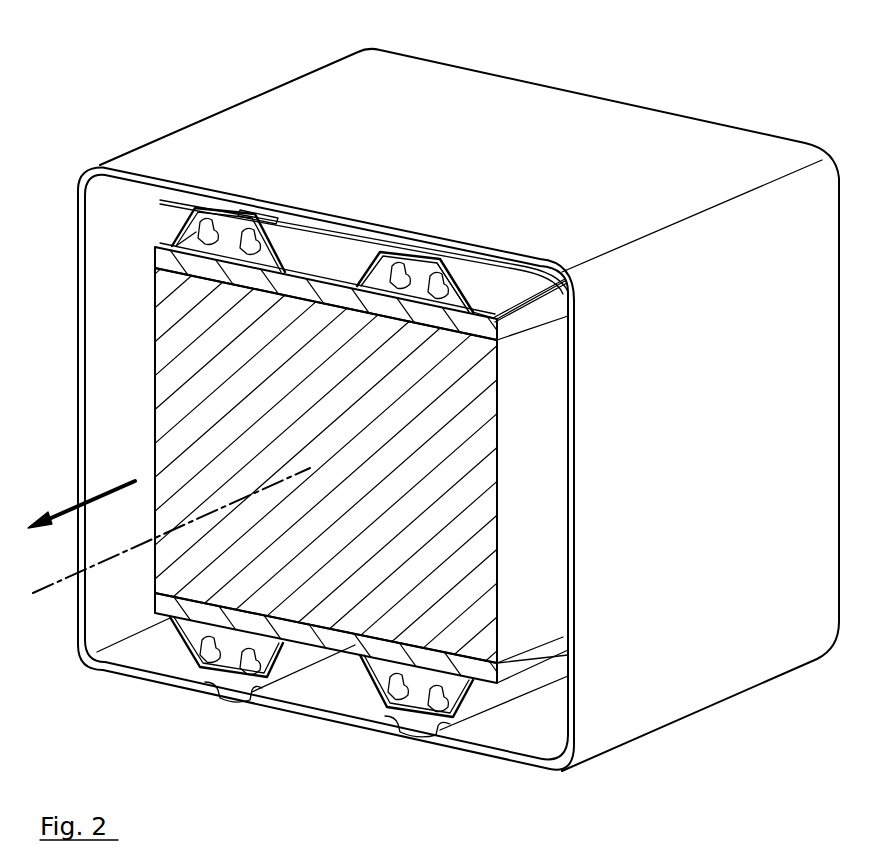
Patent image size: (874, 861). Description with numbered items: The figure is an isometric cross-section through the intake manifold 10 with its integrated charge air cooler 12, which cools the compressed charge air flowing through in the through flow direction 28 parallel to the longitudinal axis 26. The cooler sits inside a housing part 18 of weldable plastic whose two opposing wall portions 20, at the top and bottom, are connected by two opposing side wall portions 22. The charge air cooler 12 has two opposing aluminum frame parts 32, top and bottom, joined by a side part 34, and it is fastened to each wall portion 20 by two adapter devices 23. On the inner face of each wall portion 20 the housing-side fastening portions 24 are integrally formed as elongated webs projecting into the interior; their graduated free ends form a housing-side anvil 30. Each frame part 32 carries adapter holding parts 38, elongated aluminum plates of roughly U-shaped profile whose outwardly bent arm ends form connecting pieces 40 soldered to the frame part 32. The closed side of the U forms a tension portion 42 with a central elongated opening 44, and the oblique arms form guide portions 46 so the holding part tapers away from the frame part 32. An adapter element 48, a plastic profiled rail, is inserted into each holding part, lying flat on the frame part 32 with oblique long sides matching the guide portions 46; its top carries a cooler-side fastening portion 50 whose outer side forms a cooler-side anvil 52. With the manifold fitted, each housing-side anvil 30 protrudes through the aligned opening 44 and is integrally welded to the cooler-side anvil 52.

The intake manifold 10 is at (82, 93).
The charge air cooler 12 is at (146, 395).
The housing part 18 is at (190, 128).
The wall portions 20 is at (312, 103).
The side wall portions 22 is at (78, 343).
The adapter devices 23 is at (280, 210).
The housing-side fastening portions 24 is at (420, 248).
The longitudinal axis 26 is at (65, 583).
The through flow direction 28 is at (58, 505).
The housing-side anvil 30 is at (438, 217).
The frame parts 32 is at (528, 313).
The side part 34 is at (540, 512).
The adapter holding parts 38 is at (545, 277).
The connecting pieces 40 is at (520, 293).
The tension portion 42 is at (455, 243).
The opening 44 is at (405, 255).
The guide portion 46 is at (487, 280).
The adapter element 48 is at (183, 247).
The cooler-side fastening portion 50 is at (200, 232).
The cooler-side anvil 52 is at (205, 212).